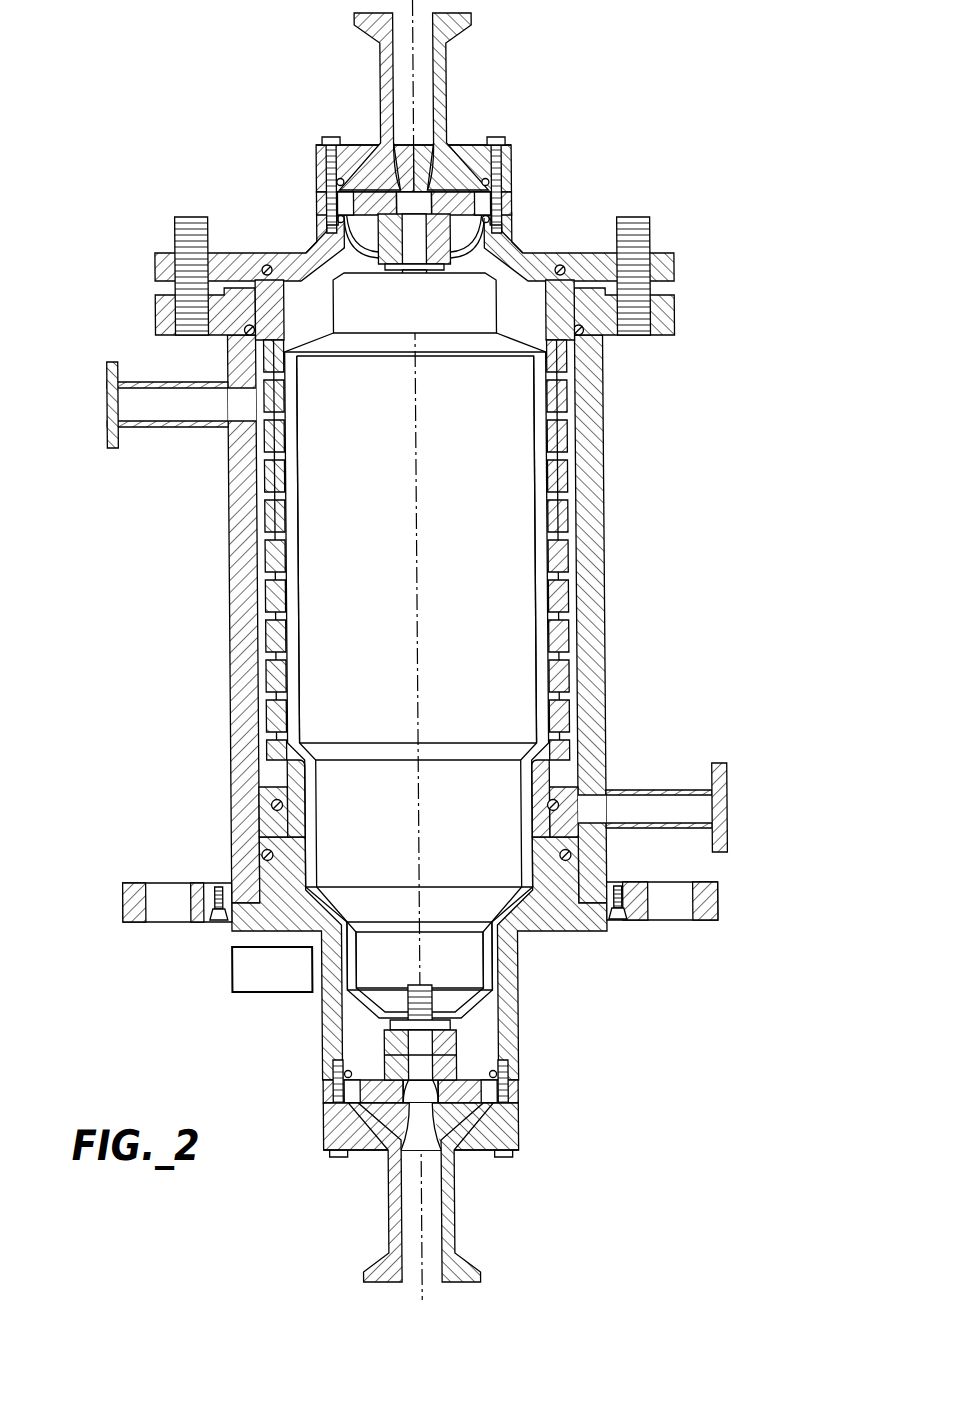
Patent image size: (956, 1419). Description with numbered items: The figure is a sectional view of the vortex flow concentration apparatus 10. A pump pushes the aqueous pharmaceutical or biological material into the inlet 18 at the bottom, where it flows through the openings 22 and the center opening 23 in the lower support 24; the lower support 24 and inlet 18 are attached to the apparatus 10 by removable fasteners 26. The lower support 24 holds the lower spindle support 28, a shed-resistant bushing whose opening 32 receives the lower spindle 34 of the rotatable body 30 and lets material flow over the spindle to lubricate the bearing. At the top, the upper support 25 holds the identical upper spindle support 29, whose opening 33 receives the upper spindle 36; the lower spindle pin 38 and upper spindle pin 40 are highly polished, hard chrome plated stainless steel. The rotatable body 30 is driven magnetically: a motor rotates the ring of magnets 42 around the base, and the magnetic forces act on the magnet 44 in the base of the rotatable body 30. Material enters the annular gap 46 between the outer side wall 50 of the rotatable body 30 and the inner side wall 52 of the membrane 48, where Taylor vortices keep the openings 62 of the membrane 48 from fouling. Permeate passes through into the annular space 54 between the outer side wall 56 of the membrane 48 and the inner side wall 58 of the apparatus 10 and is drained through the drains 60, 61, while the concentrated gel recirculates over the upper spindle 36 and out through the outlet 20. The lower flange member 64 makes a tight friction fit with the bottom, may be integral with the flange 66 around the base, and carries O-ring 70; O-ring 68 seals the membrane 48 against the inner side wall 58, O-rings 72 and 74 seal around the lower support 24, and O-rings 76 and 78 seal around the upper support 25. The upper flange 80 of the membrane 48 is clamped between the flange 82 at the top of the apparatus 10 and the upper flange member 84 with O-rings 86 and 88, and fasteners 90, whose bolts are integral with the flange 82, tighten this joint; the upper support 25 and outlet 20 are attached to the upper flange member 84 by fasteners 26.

The apparatus 10 is at (600, 598).
The inlet 18 is at (450, 1240).
The outlet 20 is at (446, 62).
The openings 22 is at (470, 190).
The center opening 23 is at (399, 192).
The lower support 24 is at (316, 1098).
The upper support 25 is at (511, 195).
The fasteners 26 is at (322, 138).
The lower spindle support 28 is at (378, 1050).
The upper spindle support 29 is at (385, 262).
The rotatable body 30 is at (541, 610).
The opening 32 is at (385, 1027).
The opening 33 is at (400, 272).
The lower spindle 34 is at (430, 1010).
The upper spindle 36 is at (512, 240).
The lower spindle pin 38 is at (447, 1185).
The upper spindle pin 40 is at (421, 185).
The ring of magnets 42 is at (224, 975).
The magnet 44 is at (448, 980).
The annular gap 46 is at (291, 585).
The membrane 48 is at (256, 433).
The outer side wall 50 is at (296, 492).
The inner side wall 52 is at (296, 437).
The annular space 54 is at (265, 600).
The outer side wall 56 is at (265, 495).
The inner side wall 58 is at (265, 545).
The drain 60 is at (104, 400).
The drain 61 is at (722, 808).
The openings 62 is at (265, 690).
The lower flange member 64 is at (226, 932).
The flange 66 is at (137, 883).
The O-ring 68 is at (268, 802).
The O-ring 70 is at (258, 852).
The O-ring 72 is at (372, 1080).
The O-ring 74 is at (352, 1140).
The O-ring 76 is at (488, 190).
The O-ring 78 is at (511, 216).
The upper flange 80 is at (585, 333).
The flange 82 is at (154, 317).
The upper flange member 84 is at (154, 276).
The O-ring 86 is at (562, 266).
The O-ring 88 is at (601, 337).
The fasteners 90 is at (184, 217).